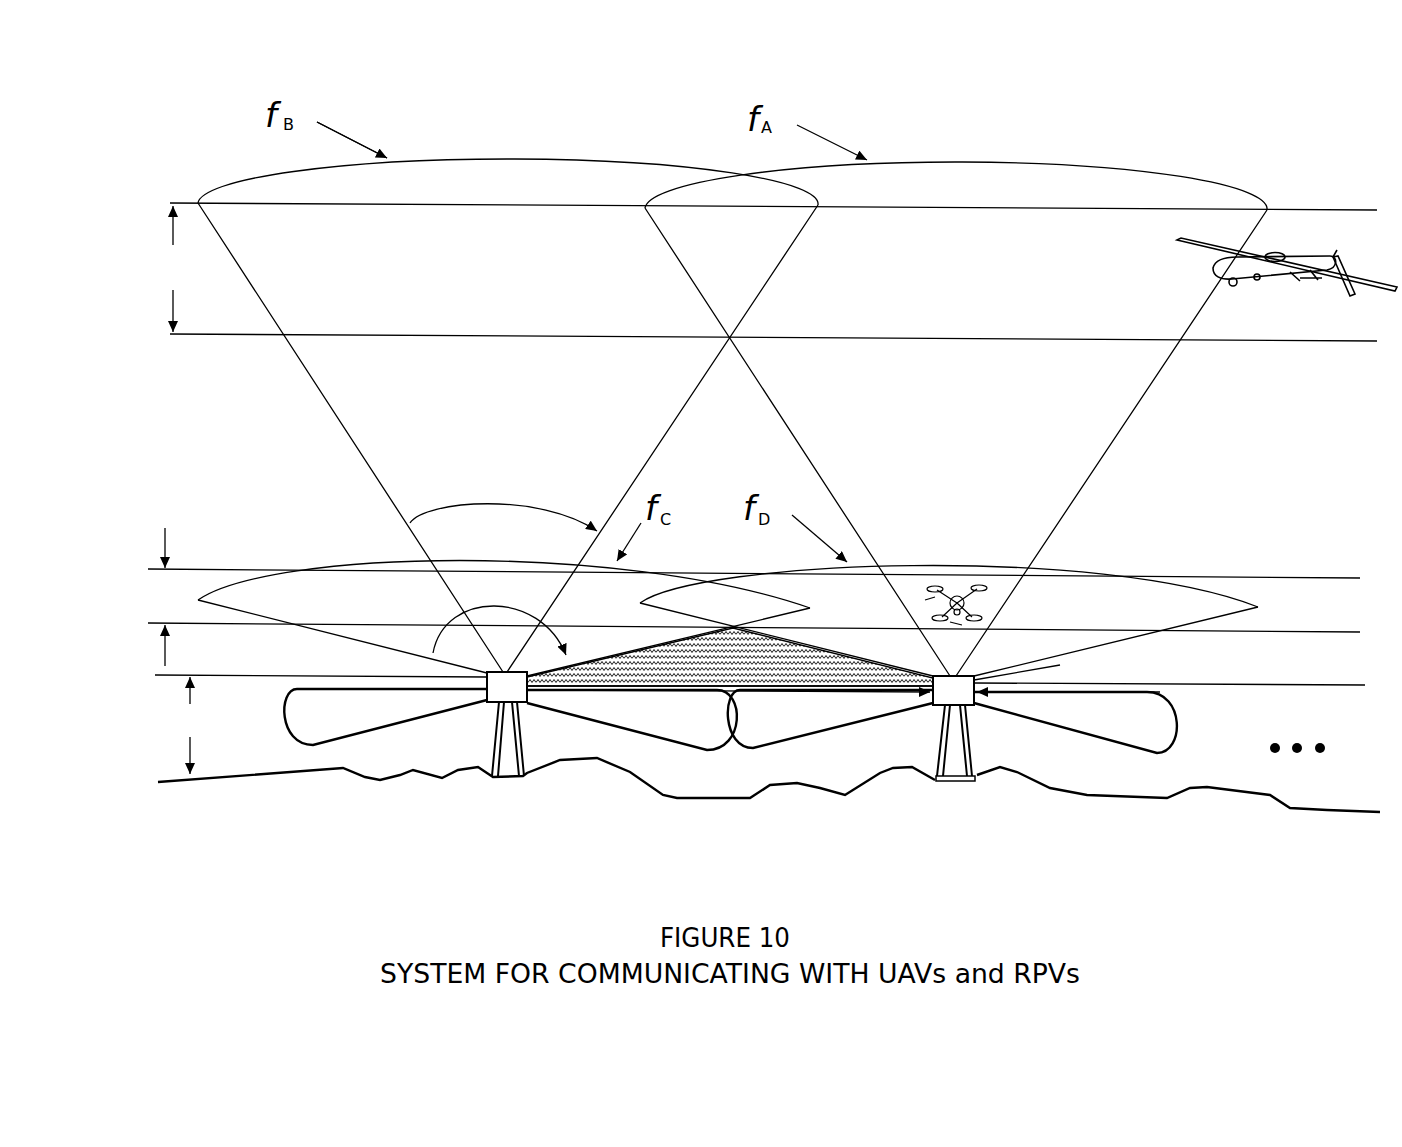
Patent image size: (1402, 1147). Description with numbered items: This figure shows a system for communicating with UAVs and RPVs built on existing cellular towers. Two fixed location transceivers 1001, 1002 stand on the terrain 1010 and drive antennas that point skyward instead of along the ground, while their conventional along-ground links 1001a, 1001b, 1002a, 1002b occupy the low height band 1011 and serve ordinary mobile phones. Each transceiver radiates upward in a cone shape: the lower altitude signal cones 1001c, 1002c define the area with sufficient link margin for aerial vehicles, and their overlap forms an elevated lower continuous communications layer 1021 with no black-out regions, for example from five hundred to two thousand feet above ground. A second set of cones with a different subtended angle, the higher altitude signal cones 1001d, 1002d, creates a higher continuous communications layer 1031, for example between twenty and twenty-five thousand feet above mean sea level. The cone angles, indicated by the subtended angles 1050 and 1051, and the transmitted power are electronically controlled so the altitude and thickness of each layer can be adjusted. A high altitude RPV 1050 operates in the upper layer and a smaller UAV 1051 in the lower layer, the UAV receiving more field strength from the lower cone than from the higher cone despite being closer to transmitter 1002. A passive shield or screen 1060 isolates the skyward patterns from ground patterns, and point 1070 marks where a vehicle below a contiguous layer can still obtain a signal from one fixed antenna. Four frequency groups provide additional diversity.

The fixed location transceiver 1001 is at (486, 704).
The fixed location transceiver 1002 is at (931, 708).
The along-ground link 1001a is at (321, 747).
The along-ground link 1001b is at (667, 731).
The lower altitude signal cone 1001c is at (352, 562).
The higher altitude signal cone 1001d is at (500, 157).
The along-ground link 1002a is at (787, 736).
The along-ground link 1002b is at (1113, 734).
The lower altitude signal cone 1002c is at (1112, 566).
The higher altitude signal cone 1002d is at (1073, 164).
The terrain / ground surface 1010 is at (1172, 802).
The altitude range of ground-level lobes 1011 is at (191, 725).
The lower altitude continuous communications layer 1021 is at (163, 597).
The higher altitude continuous communications layer 1031 is at (172, 269).
The remotely piloted vehicle (RPV) 1050 is at (1287, 244).
The unmanned aerial vehicle (UAV) 1051 is at (1003, 497).
The passive shield or screen 1060 is at (1017, 684).
The point below contiguous communications layer 1070 is at (591, 681).